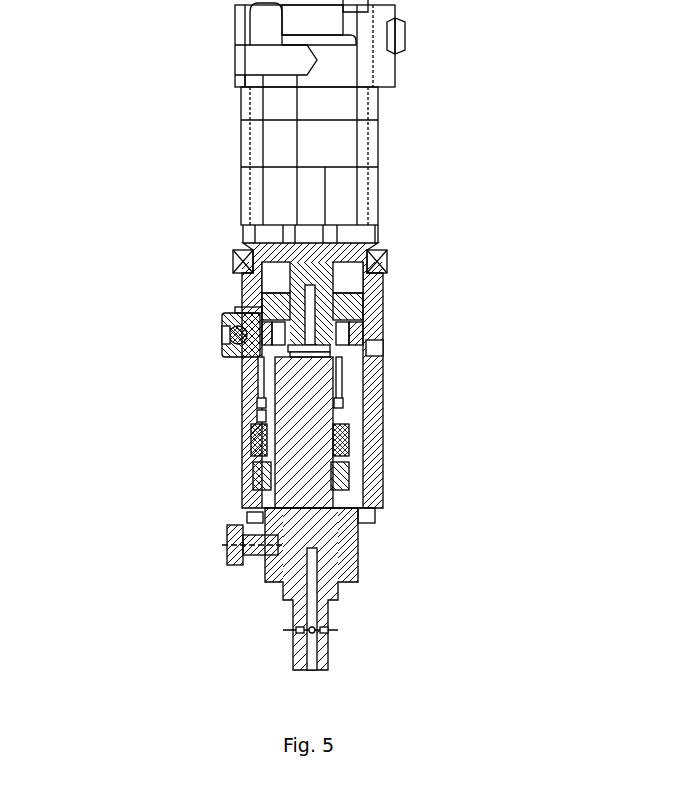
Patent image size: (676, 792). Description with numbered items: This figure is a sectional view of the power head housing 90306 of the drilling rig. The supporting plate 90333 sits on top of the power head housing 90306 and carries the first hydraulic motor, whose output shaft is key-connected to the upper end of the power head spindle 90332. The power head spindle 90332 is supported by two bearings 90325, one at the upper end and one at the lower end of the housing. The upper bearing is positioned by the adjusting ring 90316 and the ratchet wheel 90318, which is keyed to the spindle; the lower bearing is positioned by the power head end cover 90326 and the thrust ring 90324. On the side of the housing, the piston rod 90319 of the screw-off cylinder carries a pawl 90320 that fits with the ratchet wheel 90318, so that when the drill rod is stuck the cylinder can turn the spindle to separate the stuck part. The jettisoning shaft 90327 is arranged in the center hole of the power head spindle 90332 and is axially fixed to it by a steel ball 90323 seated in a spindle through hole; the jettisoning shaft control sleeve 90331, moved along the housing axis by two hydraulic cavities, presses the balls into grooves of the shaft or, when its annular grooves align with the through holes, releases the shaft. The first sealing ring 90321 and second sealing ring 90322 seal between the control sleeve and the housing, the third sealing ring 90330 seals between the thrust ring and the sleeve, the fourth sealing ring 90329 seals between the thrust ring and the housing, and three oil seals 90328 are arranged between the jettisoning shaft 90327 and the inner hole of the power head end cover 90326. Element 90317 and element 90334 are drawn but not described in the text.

The power head housing 90306 is at (383, 290).
The adjusting ring 90316 is at (253, 268).
The cover plate 90317 is at (240, 308).
The ratchet wheel 90318 is at (237, 317).
The piston rod 90319 is at (230, 333).
The pawl 90320 is at (223, 346).
The first sealing ring 90321 is at (263, 375).
The second sealing ring 90322 is at (262, 400).
The steel ball 90323 is at (262, 412).
The thrust ring 90324 is at (260, 440).
The bearings 90325 is at (262, 480).
The power head end cover 90326 is at (228, 558).
The jettisoning shaft 90327 is at (323, 598).
The oil seals 90328 is at (373, 513).
The fourth sealing ring 90329 is at (382, 450).
The third sealing ring 90330 is at (382, 423).
The jettisoning shaft control sleeve 90331 is at (382, 408).
The power head spindle 90332 is at (377, 348).
The supporting plate 90333 is at (386, 262).
The cap 90334 is at (323, 252).